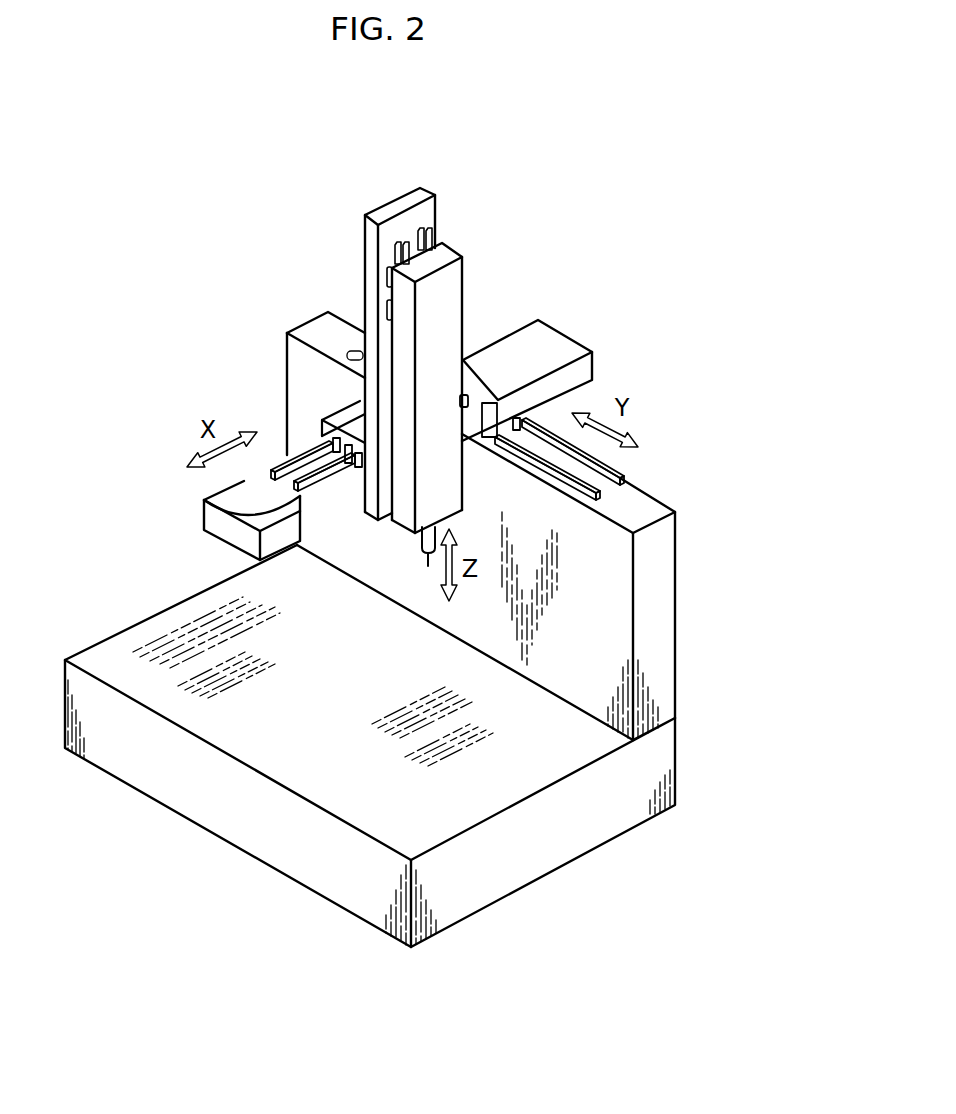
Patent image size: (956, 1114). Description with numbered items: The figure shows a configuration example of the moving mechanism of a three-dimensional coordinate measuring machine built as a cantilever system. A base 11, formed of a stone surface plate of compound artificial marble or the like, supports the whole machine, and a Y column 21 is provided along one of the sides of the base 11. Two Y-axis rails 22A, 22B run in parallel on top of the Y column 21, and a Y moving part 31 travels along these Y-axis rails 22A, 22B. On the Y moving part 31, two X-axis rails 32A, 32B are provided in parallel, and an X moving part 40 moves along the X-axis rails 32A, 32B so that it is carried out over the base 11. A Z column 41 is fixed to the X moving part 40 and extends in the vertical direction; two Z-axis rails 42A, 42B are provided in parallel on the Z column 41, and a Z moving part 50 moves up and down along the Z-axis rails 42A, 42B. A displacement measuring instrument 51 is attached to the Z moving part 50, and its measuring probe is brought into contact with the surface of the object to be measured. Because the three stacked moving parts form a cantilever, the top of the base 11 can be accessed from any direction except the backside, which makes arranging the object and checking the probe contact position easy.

The base 11 is at (573, 838).
The Y column 21 is at (653, 638).
The Y-axis rail 22A is at (615, 473).
The Y-axis rail 22B is at (598, 493).
The Y moving part 31 is at (232, 533).
The X-axis rail 32A is at (308, 450).
The X-axis rail 32B is at (203, 512).
The X moving part 40 is at (548, 343).
The Z column 41 is at (420, 195).
The Z-axis rail 42A is at (430, 238).
The Z-axis rail 42B is at (395, 252).
The Z moving part 50 is at (447, 296).
The displacement measuring instrument 51 is at (424, 545).